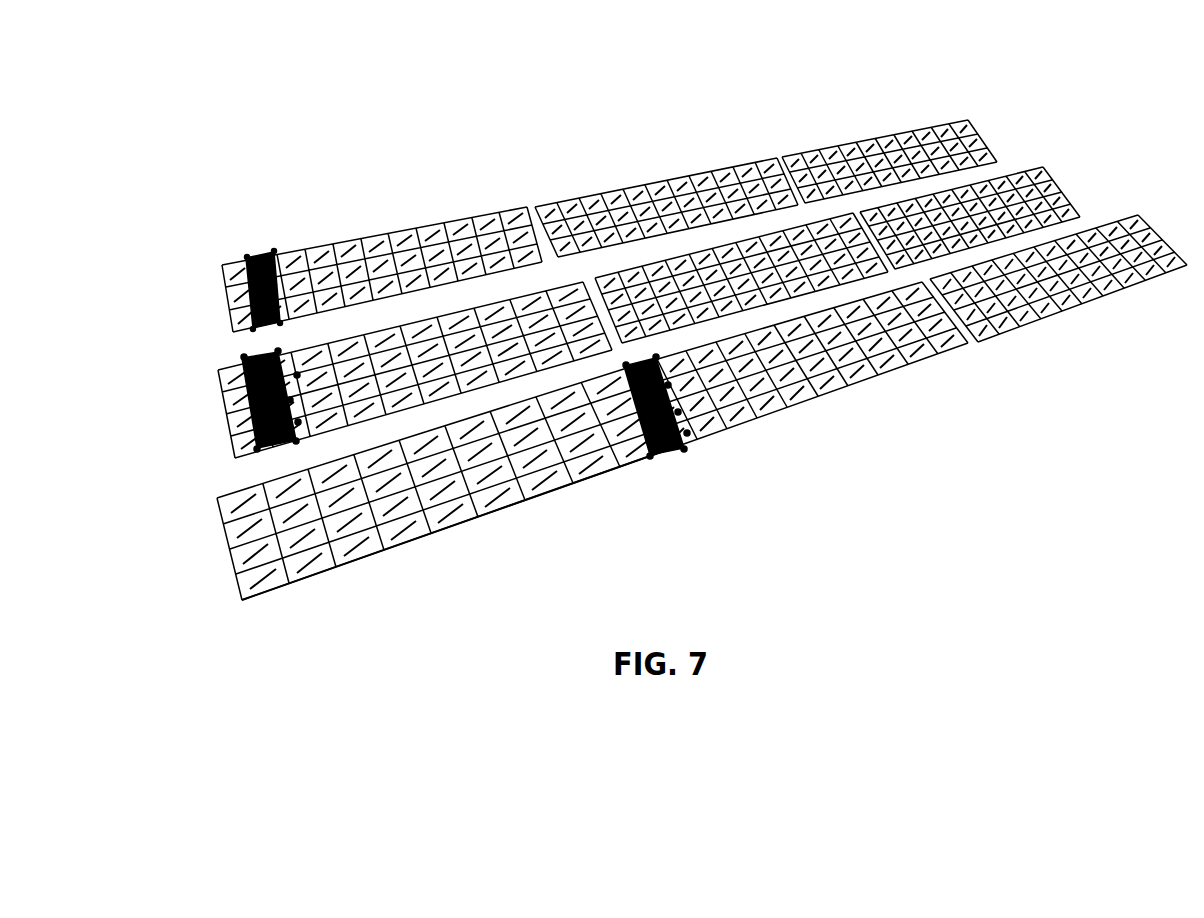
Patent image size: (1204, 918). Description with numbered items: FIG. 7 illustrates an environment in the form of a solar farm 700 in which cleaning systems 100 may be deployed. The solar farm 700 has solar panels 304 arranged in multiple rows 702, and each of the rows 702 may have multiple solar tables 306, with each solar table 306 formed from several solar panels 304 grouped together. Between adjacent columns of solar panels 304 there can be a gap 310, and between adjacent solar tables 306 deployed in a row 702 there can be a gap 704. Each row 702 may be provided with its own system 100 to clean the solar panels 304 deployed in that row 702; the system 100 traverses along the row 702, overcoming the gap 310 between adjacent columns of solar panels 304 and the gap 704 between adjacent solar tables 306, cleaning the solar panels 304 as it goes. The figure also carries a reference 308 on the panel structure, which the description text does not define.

The solar farm 700 is at (670, 333).
The row 702 is at (912, 137).
The solar table 306 is at (382, 254).
The system 100 is at (230, 351).
The gap 704 is at (678, 438).
The panel frame 308 is at (404, 484).
The solar panel 304 is at (454, 536).
The gap 310 is at (440, 483).